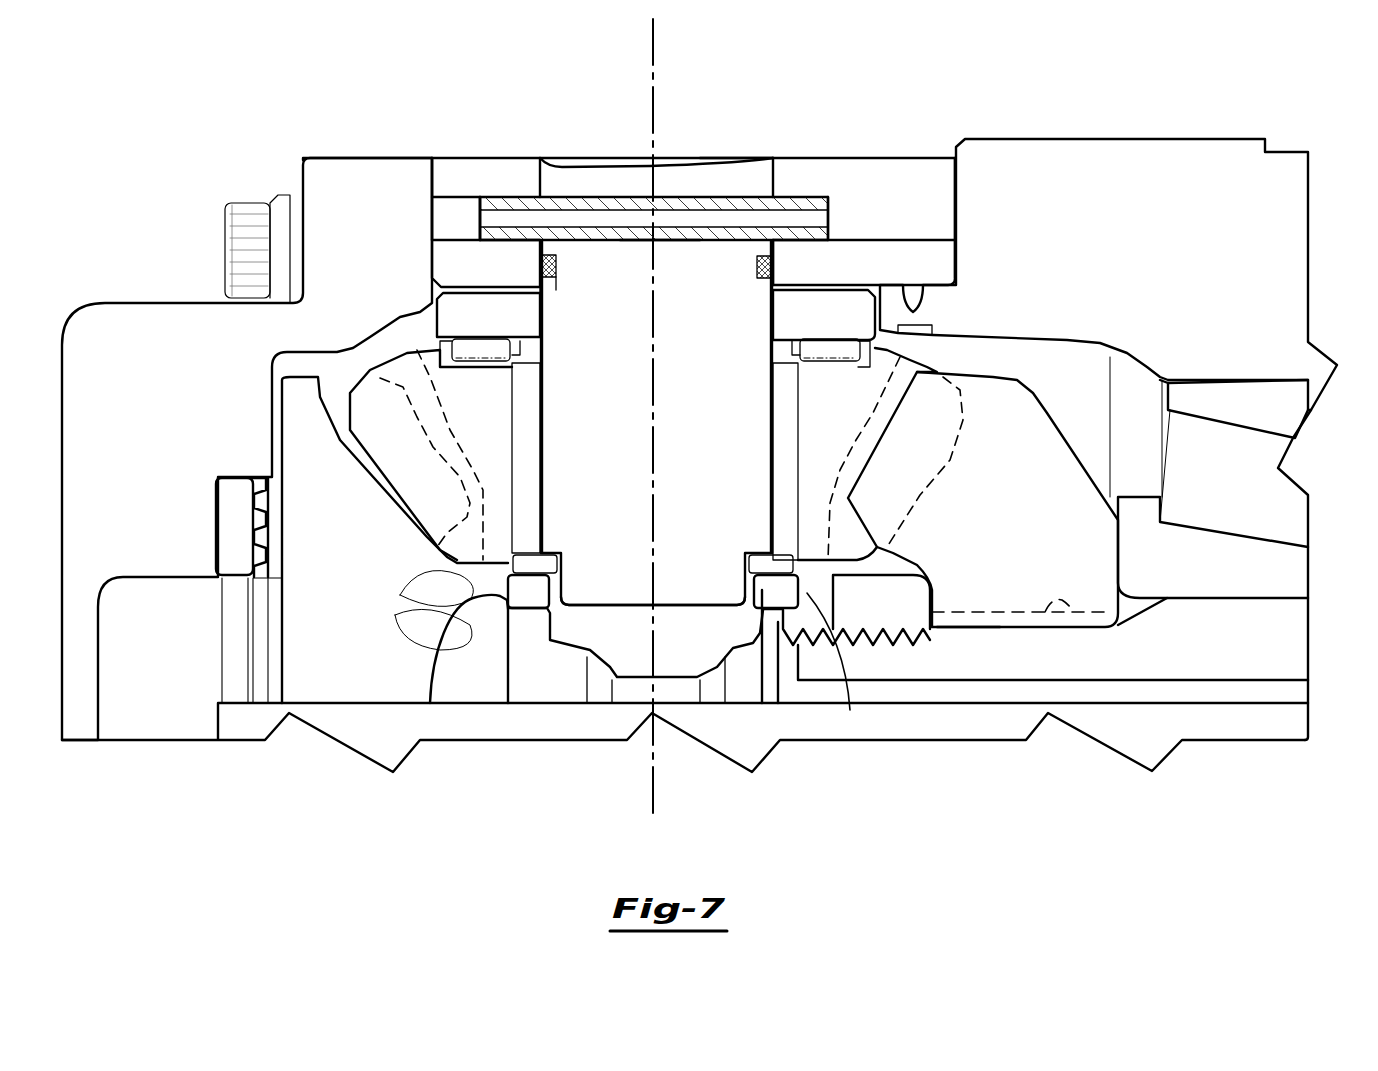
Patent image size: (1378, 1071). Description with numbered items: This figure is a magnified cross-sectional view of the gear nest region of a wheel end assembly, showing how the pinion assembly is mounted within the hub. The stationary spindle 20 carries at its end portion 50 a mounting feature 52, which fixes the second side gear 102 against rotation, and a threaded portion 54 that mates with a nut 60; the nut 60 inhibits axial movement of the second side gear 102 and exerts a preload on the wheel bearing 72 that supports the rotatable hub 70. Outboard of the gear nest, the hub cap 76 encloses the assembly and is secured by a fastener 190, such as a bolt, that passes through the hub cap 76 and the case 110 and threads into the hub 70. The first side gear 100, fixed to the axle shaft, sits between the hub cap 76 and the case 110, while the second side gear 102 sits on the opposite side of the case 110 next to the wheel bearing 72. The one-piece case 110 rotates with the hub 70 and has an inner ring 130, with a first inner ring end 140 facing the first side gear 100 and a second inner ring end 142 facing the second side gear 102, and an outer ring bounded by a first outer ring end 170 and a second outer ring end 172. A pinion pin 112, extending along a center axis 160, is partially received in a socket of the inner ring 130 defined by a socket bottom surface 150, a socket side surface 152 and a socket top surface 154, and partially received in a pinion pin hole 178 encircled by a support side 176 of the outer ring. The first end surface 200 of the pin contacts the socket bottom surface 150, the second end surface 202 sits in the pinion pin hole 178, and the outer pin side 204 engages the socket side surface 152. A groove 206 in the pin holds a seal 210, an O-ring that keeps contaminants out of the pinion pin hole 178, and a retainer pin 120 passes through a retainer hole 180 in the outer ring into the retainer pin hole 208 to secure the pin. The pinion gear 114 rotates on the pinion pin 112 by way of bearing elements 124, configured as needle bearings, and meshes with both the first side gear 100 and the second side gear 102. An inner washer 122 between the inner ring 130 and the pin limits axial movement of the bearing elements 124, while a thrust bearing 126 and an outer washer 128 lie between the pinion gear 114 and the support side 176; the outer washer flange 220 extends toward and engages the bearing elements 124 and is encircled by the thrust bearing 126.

The spindle 20 is at (1310, 640).
The end portion 50 is at (770, 667).
The mounting feature 52 is at (1062, 600).
The threaded portion 54 is at (880, 627).
The nut 60 is at (903, 610).
The hub 70 is at (1074, 139).
The wheel bearing 72 is at (1310, 572).
The hub cap 76 is at (179, 399).
The first side gear 100 is at (344, 548).
The second side gear 102 is at (1026, 498).
The case 110 is at (878, 158).
The pinion pin 112 is at (668, 496).
The pinion gear 114 is at (853, 413).
The retainer pin 120 is at (640, 197).
The inner washer 122 is at (547, 553).
The bearing element 124 is at (770, 427).
The thrust bearing 126 is at (813, 352).
The outer washer 128 is at (530, 317).
The inner ring 130 is at (640, 668).
The first inner ring end 140 is at (431, 705).
The second inner ring end 142 is at (850, 710).
The socket bottom surface 150 is at (667, 602).
The socket side surface 152 is at (748, 580).
The socket top surface 154 is at (770, 572).
The center axis 160 is at (656, 47).
The first outer ring end 170 is at (412, 158).
The second outer ring end 172 is at (960, 183).
The support side 176 is at (807, 290).
The pinion pin hole 178 is at (764, 155).
The retainer hole 180 is at (465, 210).
The fastener 190 is at (253, 203).
The first end surface 200 is at (612, 600).
The second end surface 202 is at (668, 162).
The outer pin side 204 is at (777, 250).
The groove 206 is at (556, 282).
The retainer pin hole 208 is at (665, 241).
The seal 210 is at (557, 264).
The outer washer flange 220 is at (522, 348).